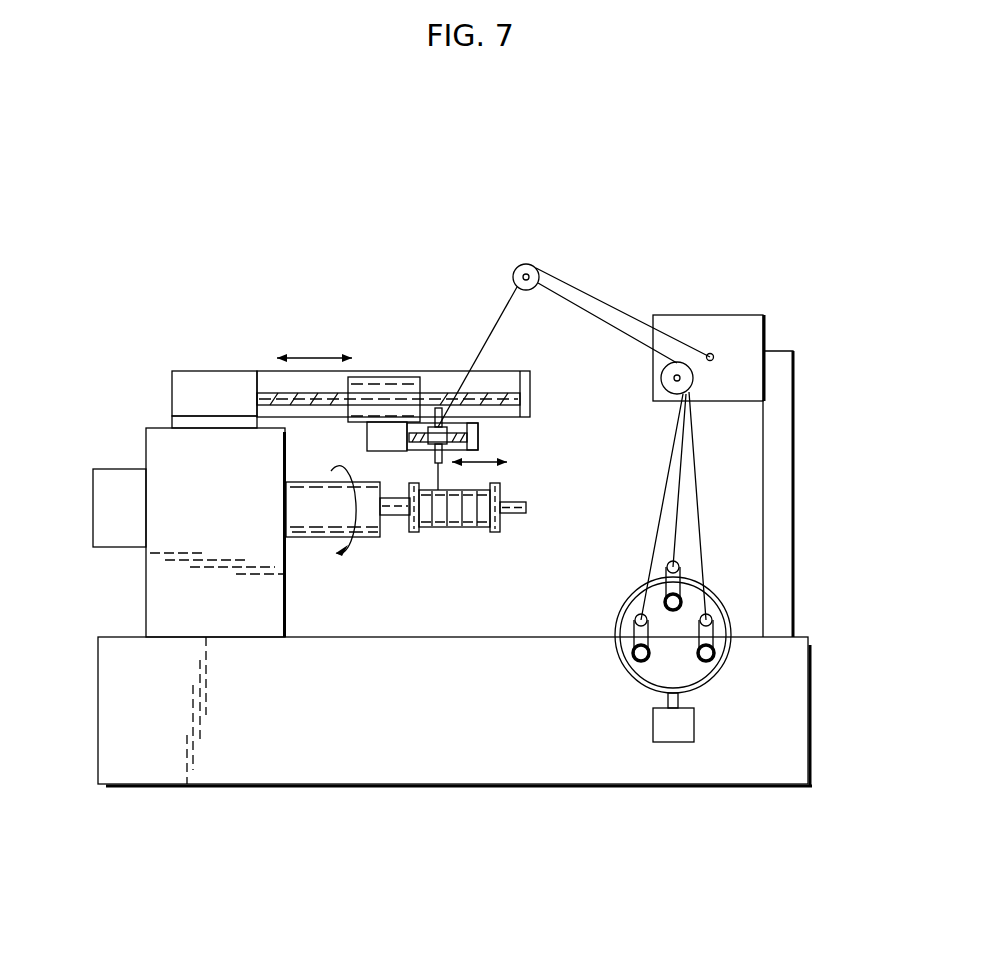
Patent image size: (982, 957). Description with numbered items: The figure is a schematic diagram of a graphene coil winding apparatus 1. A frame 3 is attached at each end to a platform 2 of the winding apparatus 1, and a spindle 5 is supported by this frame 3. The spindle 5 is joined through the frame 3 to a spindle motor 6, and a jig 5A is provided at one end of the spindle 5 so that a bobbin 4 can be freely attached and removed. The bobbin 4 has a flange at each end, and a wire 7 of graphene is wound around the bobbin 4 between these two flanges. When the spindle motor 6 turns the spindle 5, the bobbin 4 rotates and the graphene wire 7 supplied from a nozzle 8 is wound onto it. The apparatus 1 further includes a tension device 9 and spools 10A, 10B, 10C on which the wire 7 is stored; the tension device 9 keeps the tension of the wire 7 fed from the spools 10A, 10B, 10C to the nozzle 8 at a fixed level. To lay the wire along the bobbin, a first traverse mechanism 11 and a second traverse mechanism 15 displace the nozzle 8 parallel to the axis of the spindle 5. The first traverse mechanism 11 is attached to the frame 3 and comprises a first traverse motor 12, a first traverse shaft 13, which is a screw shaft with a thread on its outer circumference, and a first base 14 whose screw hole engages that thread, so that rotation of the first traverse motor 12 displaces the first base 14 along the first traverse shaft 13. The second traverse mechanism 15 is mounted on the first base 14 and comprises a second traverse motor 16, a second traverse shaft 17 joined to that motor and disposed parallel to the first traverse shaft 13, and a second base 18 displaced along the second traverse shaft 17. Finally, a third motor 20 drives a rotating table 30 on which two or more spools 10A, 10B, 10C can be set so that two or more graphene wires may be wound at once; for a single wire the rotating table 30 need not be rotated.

The graphene coil winding apparatus 1 is at (812, 512).
The platform 2 is at (212, 770).
The frame 3 is at (152, 600).
The bobbin 4 is at (453, 527).
The spindle 5 is at (308, 537).
The jig 5A is at (515, 515).
The spindle motor 6 is at (113, 472).
The wire 7 is at (493, 305).
The nozzle 8 is at (440, 464).
The tension device 9 is at (708, 315).
The spool 10A is at (632, 640).
The spool 10B is at (712, 640).
The spool 10C is at (667, 574).
The first traverse mechanism 11 is at (428, 371).
The first traverse motor 12 is at (214, 378).
The first traverse shaft 13 is at (487, 396).
The first base 14 is at (382, 390).
The second traverse mechanism 15 is at (413, 452).
The second traverse motor 16 is at (367, 437).
The second traverse shaft 17 is at (480, 441).
The second base 18 is at (443, 428).
The third motor 20 is at (677, 743).
The rotating table 30 is at (712, 682).